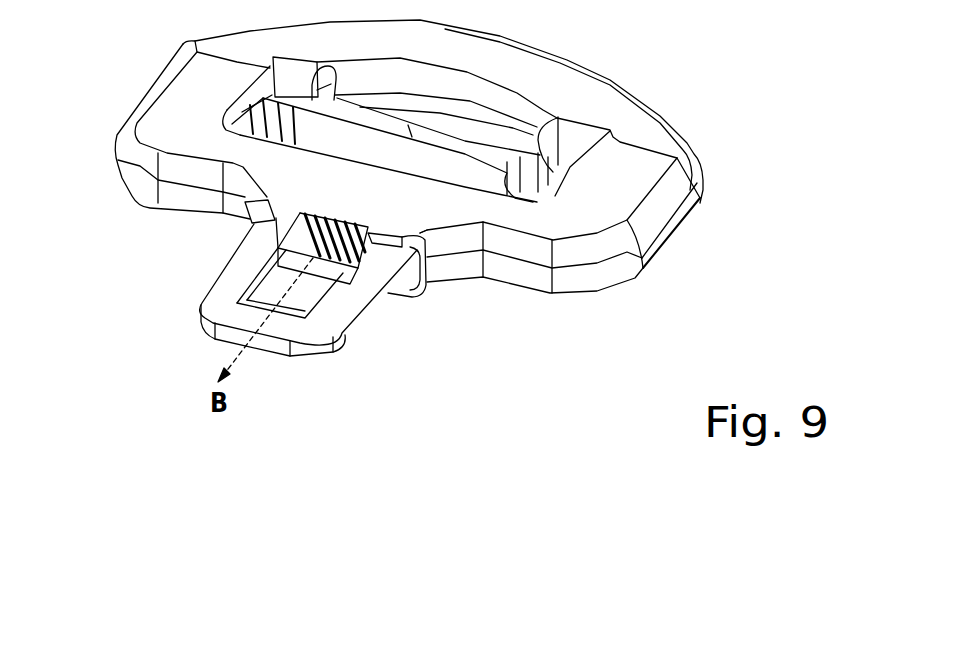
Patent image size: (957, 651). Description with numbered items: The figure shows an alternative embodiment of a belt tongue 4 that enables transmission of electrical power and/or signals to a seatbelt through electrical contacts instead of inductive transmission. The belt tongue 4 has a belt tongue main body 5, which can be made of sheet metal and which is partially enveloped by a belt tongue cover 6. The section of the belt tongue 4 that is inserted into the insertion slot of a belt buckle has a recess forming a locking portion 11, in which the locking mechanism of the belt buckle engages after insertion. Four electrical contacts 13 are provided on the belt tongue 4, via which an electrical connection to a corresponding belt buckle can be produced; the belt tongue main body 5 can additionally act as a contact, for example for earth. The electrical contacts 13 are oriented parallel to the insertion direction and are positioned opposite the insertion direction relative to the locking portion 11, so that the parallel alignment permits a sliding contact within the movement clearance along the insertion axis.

The belt tongue 4 is at (468, 335).
The belt tongue main body 5 is at (363, 277).
The belt tongue cover 6 is at (603, 253).
The locking portion 11 is at (308, 297).
The electrical contacts 13 is at (292, 256).